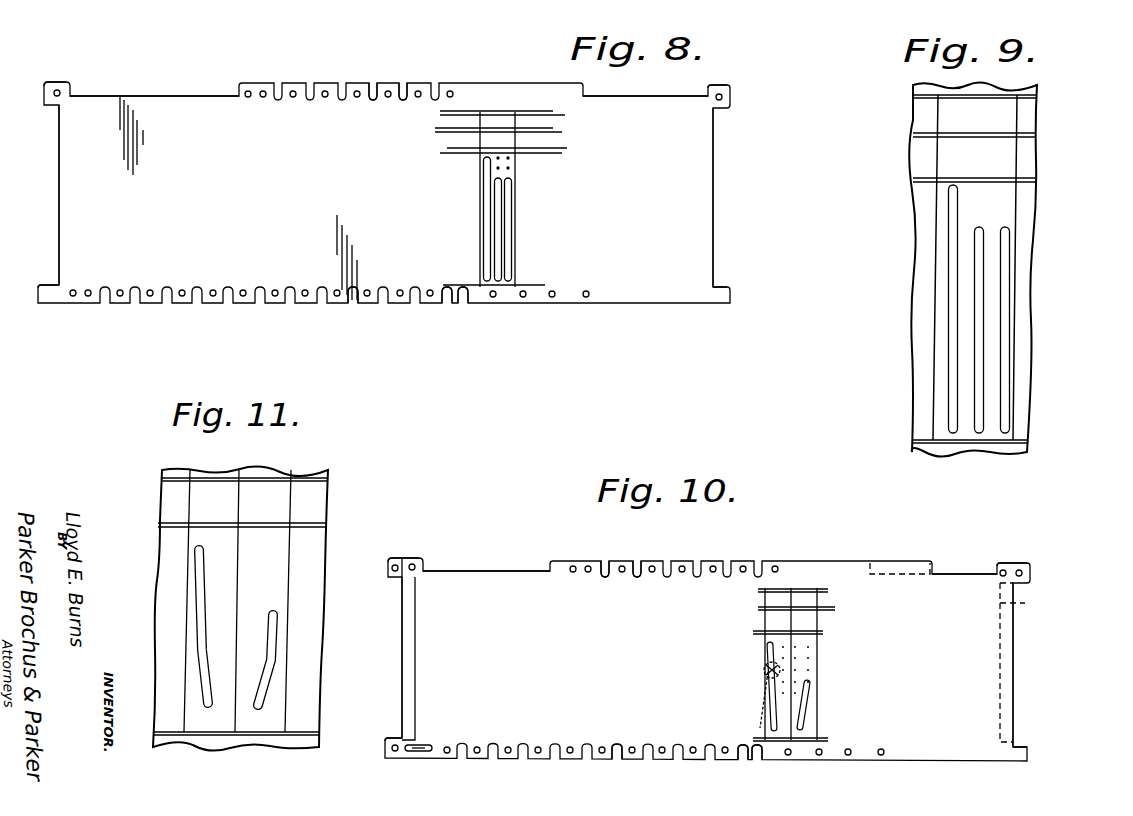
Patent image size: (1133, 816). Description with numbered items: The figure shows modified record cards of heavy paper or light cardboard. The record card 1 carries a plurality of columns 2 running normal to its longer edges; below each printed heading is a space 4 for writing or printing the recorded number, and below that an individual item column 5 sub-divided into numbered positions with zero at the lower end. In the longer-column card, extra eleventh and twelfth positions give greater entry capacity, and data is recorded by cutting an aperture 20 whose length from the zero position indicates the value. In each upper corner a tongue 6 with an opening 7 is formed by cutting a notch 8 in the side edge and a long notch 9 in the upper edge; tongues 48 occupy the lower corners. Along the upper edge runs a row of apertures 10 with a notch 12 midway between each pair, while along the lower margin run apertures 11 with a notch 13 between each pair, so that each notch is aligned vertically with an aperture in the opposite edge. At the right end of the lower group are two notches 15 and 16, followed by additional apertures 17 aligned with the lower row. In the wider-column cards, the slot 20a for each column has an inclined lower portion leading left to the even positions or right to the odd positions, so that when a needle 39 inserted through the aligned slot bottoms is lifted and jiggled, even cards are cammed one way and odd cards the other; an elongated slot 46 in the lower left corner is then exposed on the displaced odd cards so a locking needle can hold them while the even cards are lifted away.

In FIG. 8, the record card 1 is at (695, 213).
In FIG. 9, the record card 1 is at (923, 213).
In FIG. 10, the record card 1 is at (430, 612).
In FIG. 8, the columns 2 is at (508, 112).
In FIG. 9, the columns 2 is at (1007, 120).
In FIG. 11, the columns 2 is at (263, 473).
In FIG. 10, the columns 2 is at (790, 664).
In FIG. 8, the spaces 4 is at (515, 137).
In FIG. 9, the spaces 4 is at (1007, 150).
In FIG. 11, the spaces 4 is at (278, 490).
In FIG. 10, the spaces 4 is at (794, 620).
In FIG. 9, the individual item columns 5 is at (995, 325).
In FIG. 11, the individual item columns 5 is at (283, 532).
In FIG. 8, the tongue 6 is at (54, 82).
In FIG. 10, the tongue 6 is at (395, 563).
In FIG. 8, the opening 7 is at (62, 92).
In FIG. 10, the opening 7 is at (414, 562).
In FIG. 8, the notch 8 is at (59, 193).
In FIG. 10, the notch 8 is at (415, 647).
In FIG. 8, the notch 9 is at (165, 95).
In FIG. 10, the notch 9 is at (498, 570).
In FIG. 8, the apertures 10 is at (325, 98).
In FIG. 10, the apertures 10 is at (682, 573).
In FIG. 8, the apertures 11 is at (336, 304).
In FIG. 10, the apertures 11 is at (540, 749).
In FIG. 8, the notch 12 is at (403, 99).
In FIG. 10, the notch 12 is at (637, 578).
In FIG. 8, the notch 13 is at (355, 304).
In FIG. 10, the notch 13 is at (617, 745).
In FIG. 8, the notch 15 is at (447, 305).
In FIG. 10, the notch 15 is at (743, 762).
In FIG. 8, the notch 16 is at (463, 305).
In FIG. 10, the notch 16 is at (757, 762).
In FIG. 8, the additional apertures 17 is at (586, 292).
In FIG. 10, the additional apertures 17 is at (848, 756).
In FIG. 8, the aperture 20 is at (500, 190).
In FIG. 9, the aperture 20 is at (983, 282).
In FIG. 11, the slots 20a is at (197, 652).
In FIG. 10, the slots 20a is at (770, 712).
In FIG. 10, the needle 39 is at (764, 672).
In FIG. 10, the slot 46 is at (418, 747).
In FIG. 8, the tongues 48 is at (52, 303).
In FIG. 10, the tongues 48 is at (392, 740).